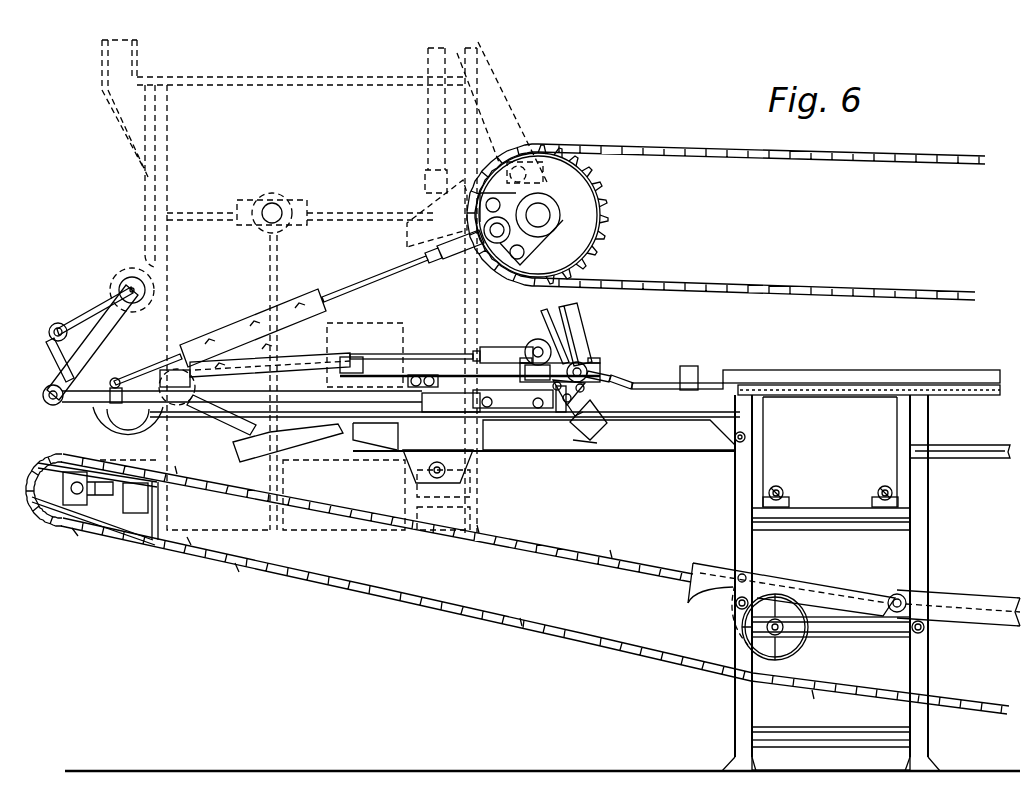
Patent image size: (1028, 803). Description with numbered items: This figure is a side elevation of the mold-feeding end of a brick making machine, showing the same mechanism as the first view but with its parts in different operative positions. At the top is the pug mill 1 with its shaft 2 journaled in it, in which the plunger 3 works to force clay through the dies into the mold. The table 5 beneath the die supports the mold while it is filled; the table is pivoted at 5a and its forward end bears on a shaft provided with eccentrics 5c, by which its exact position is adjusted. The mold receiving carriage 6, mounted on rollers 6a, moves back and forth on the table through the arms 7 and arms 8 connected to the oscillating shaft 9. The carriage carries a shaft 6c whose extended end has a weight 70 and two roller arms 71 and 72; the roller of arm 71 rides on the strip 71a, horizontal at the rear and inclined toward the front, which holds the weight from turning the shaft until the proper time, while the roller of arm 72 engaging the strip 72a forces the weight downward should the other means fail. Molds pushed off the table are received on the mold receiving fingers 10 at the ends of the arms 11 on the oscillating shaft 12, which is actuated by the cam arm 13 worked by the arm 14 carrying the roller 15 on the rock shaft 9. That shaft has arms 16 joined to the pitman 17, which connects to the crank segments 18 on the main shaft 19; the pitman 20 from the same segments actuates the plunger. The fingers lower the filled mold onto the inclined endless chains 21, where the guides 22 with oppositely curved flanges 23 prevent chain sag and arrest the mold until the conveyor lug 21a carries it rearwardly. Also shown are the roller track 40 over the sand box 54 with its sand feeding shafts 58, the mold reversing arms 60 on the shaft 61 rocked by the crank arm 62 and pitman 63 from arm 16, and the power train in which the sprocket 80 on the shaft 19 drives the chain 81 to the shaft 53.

The pug mill 1 is at (288, 286).
The shaft 2 is at (276, 212).
The plunger 3 is at (425, 172).
The table 5 is at (535, 452).
The pivot 5a is at (748, 437).
The eccentrics 5c is at (405, 462).
The mold receiving carriage 6 is at (576, 418).
The rollers 6a is at (552, 322).
The shaft 6c is at (590, 445).
The arms 7 is at (300, 404).
The arms 8 is at (60, 368).
The oscillating shaft 9 is at (132, 277).
The mold receiving fingers 10 is at (293, 440).
The arms 11 is at (217, 425).
The oscillating shaft 12 is at (181, 365).
The cam arm 13 is at (95, 428).
The arm 14 is at (88, 303).
The roller 15 is at (52, 325).
The arms 16 is at (125, 330).
The pitman 17 is at (357, 280).
The crank segments 18 is at (510, 262).
The shaft 19 is at (545, 218).
The pitman 20 is at (505, 122).
The endless chains 21 is at (615, 566).
The conveyor lug 21a is at (538, 540).
The guides 22 is at (838, 590).
The curved flanges 23 is at (712, 600).
The roller track 40 is at (861, 369).
The shaft 53 is at (450, 470).
The sand box 54 is at (830, 452).
The shafts 58 is at (870, 493).
The mold reversing arms 60 is at (586, 318).
The shaft 61 is at (584, 364).
The crank arm 62 is at (531, 346).
The pitman 63 is at (440, 352).
The weight 70 is at (603, 427).
The arm 71 is at (558, 412).
The strip 71a is at (645, 382).
The arm 72 is at (588, 392).
The strip 72a is at (612, 376).
The sprocket 80 is at (580, 202).
The chain 81 is at (830, 165).